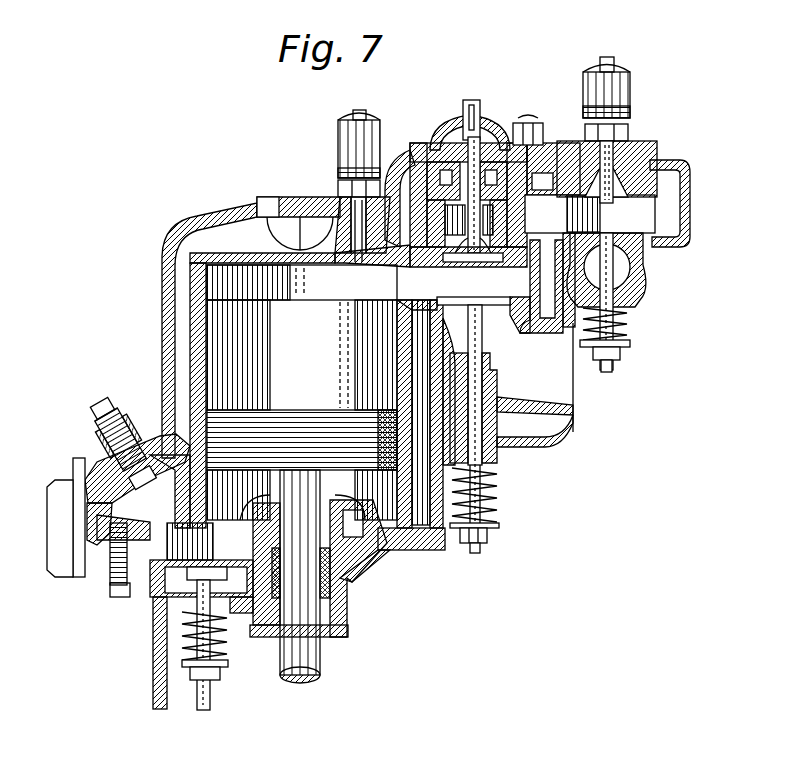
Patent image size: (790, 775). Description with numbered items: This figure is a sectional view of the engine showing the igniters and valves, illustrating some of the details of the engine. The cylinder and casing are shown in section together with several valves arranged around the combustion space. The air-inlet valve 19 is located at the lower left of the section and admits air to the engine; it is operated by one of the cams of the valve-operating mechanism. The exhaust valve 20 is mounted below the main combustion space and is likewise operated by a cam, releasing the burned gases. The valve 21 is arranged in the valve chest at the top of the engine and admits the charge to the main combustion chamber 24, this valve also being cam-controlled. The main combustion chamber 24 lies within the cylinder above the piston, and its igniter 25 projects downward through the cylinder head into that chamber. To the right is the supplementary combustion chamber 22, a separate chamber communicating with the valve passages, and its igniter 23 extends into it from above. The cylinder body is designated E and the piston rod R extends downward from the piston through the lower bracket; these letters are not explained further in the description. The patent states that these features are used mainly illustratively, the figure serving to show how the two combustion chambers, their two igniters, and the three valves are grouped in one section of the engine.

The air-inlet valve 19 is at (210, 560).
The exhaust valve 20 is at (493, 300).
The charge-admitting valve 21 is at (448, 258).
The supplementary combustion chamber 22 is at (607, 203).
The igniter 23 is at (612, 185).
The main combustion chamber 24 is at (302, 392).
The igniter 25 is at (360, 255).
The engine cylinder E is at (313, 426).
The piston rod R is at (322, 657).